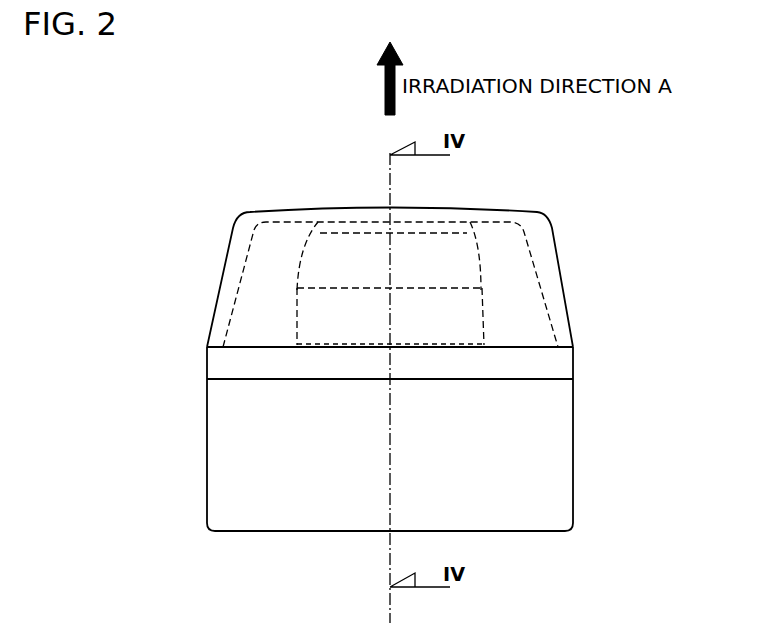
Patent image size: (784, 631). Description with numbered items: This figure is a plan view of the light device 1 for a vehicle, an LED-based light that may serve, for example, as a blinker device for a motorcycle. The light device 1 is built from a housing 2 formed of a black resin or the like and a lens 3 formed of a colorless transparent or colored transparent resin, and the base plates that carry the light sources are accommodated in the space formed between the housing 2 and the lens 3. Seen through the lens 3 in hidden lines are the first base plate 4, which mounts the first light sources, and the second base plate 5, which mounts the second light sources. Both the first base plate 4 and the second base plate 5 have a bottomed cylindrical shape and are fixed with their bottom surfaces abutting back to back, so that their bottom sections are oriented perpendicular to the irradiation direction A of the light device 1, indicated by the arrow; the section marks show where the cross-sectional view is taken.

The light device 1 is at (223, 178).
The housing 2 is at (545, 465).
The lens 3 is at (505, 212).
The first base plate 4 is at (477, 252).
The second base plate 5 is at (483, 313).